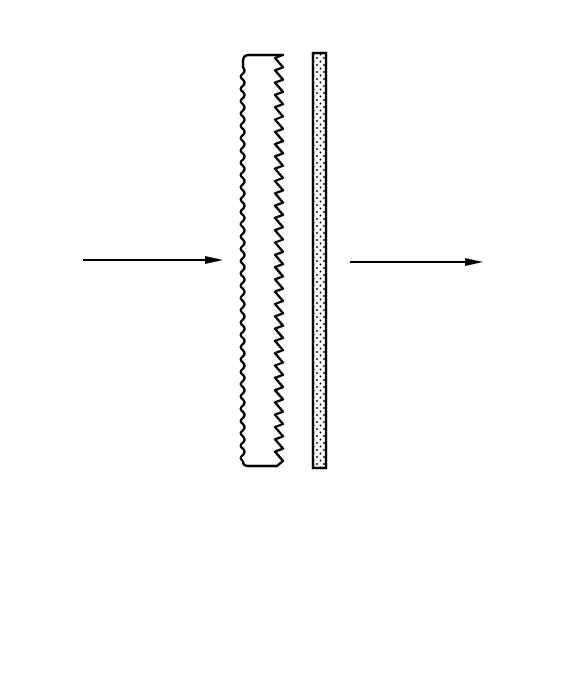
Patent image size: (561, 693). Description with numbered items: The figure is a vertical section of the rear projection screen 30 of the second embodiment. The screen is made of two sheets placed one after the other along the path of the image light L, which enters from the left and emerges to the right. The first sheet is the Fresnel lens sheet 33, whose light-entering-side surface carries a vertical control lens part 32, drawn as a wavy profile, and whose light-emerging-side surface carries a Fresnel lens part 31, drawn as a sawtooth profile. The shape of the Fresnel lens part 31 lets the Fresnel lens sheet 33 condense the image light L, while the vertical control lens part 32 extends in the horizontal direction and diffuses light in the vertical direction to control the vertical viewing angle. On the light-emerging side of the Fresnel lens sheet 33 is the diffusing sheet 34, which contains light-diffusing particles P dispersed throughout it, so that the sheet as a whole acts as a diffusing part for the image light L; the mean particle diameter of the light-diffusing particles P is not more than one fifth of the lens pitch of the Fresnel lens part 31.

The rear projection screen 30 is at (384, 94).
The Fresnel lens part 31 is at (278, 417).
The vertical control lens part 32 is at (240, 408).
The Fresnel lens sheet 33 is at (306, 514).
The diffusing sheet 34 is at (324, 480).
The light-diffusing particles P is at (325, 395).
The image light L is at (152, 260).